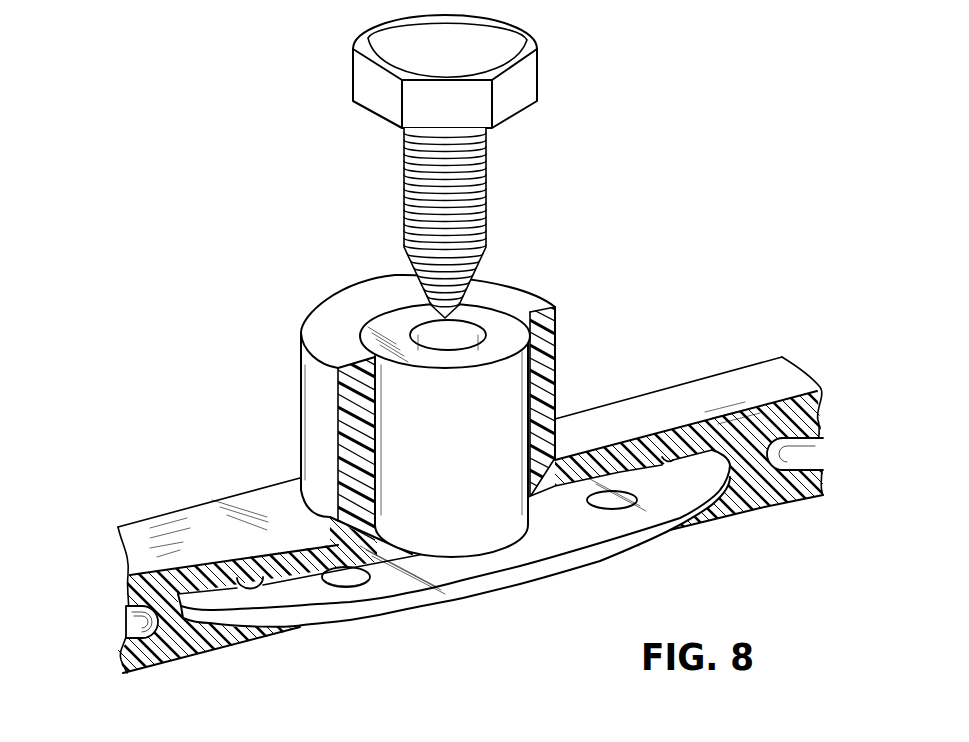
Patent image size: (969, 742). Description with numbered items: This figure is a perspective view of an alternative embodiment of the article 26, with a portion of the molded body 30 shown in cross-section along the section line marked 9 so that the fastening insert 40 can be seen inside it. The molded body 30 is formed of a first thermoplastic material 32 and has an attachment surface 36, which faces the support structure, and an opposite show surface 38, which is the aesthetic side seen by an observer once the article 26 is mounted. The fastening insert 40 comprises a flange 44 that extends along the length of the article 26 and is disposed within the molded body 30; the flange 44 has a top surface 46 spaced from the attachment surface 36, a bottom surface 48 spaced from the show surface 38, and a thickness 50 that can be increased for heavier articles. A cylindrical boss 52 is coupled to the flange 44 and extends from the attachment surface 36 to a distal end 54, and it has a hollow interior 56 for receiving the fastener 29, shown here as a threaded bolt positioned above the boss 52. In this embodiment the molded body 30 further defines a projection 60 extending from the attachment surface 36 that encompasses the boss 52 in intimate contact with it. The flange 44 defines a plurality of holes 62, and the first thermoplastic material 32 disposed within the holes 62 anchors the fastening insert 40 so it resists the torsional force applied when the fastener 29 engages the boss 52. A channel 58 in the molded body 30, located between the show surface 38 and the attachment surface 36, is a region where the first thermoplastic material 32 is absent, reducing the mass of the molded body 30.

The article 26 is at (203, 300).
The fastener 29 is at (348, 70).
The molded body 30 is at (796, 340).
The first thermoplastic material 32 is at (762, 500).
The attachment surface 36 is at (185, 533).
The show surface 38 is at (207, 653).
The fastening insert 40 is at (560, 528).
The flange 44 is at (368, 612).
The top surface 46 is at (582, 527).
The bottom surface 48 is at (640, 530).
The thickness 50 is at (524, 577).
The boss 52 is at (513, 377).
The distal end 54 is at (488, 325).
The hollow interior 56 is at (424, 340).
The channel 58 is at (130, 613).
The projection 60 is at (323, 408).
The holes 62 is at (333, 568).
The section line 9- 9 is at (123, 627).